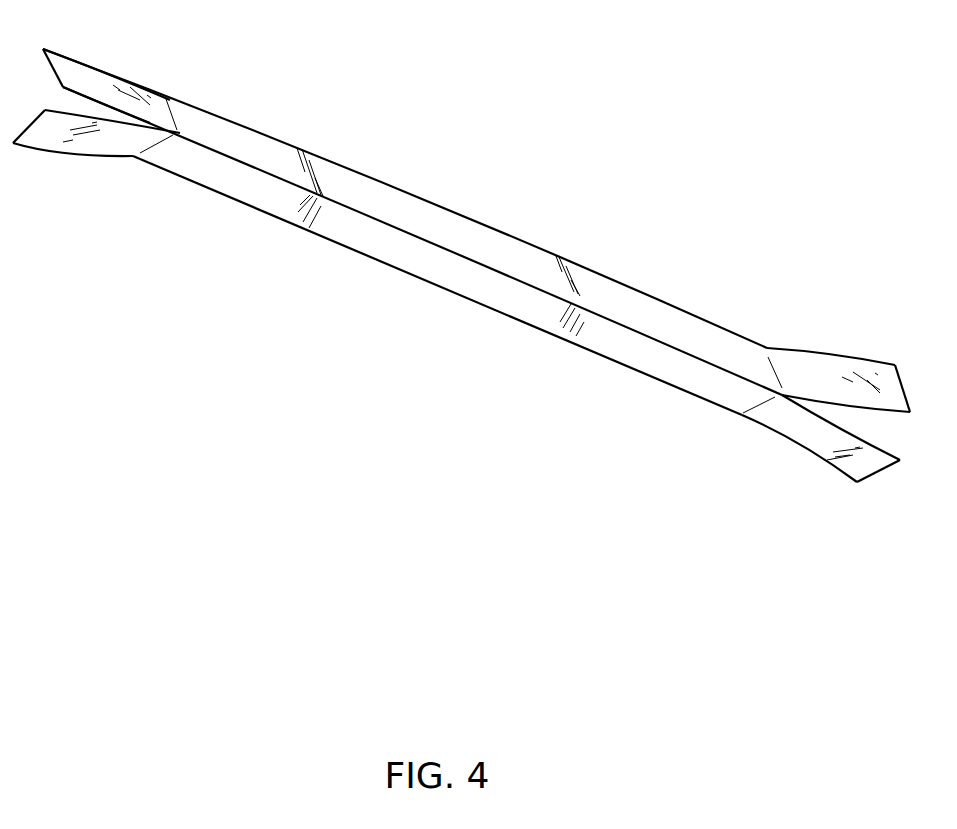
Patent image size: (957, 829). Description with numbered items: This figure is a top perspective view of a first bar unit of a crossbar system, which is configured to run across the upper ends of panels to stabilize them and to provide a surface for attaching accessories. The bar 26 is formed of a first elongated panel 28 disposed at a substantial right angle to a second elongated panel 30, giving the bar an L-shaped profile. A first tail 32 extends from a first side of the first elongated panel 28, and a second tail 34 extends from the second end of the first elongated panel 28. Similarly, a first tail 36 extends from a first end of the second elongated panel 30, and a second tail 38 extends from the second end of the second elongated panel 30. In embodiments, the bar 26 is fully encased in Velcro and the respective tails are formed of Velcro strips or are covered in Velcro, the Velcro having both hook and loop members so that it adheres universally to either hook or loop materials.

The bar 26 is at (461, 270).
The first elongated panel 28 is at (432, 265).
The second elongated panel 30 is at (435, 215).
The first tail 32 is at (113, 140).
The second tail 34 is at (805, 447).
The first tail 36 is at (97, 73).
The second tail 38 is at (827, 365).